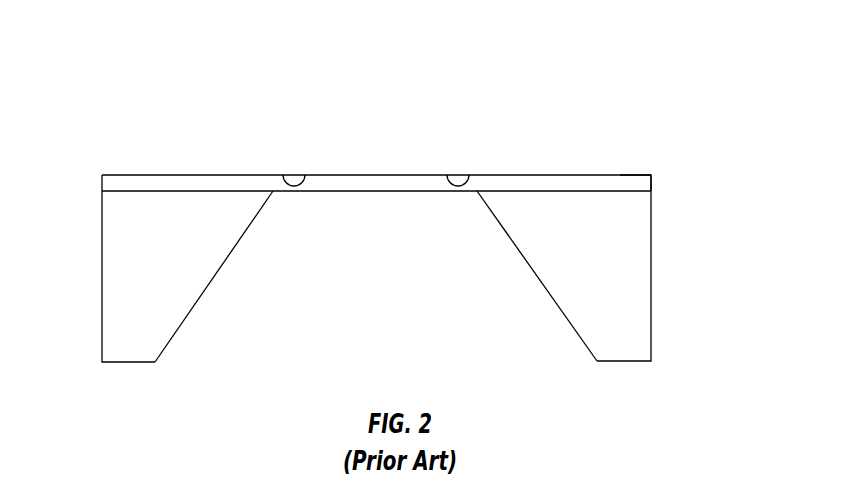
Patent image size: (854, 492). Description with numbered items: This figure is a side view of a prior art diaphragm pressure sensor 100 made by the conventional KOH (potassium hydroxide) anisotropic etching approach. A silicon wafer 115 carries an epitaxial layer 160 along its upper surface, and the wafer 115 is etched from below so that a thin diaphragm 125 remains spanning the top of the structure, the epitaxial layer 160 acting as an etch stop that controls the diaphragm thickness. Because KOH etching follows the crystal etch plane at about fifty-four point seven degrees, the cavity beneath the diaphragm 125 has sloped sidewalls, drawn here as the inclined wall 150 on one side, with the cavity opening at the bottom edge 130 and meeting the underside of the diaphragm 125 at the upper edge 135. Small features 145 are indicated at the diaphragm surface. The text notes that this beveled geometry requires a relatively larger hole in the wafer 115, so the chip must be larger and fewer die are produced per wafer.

The diaphragm pressure sensor 100 is at (614, 101).
The wafer 115 is at (101, 275).
The diaphragm 125 is at (393, 166).
The cavity bottom opening edge 130 is at (597, 361).
The cavity top edge 135 is at (477, 191).
The dimple 145 is at (295, 176).
The sloped cavity sidewall 150 is at (213, 277).
The epitaxial layer 160 is at (636, 178).